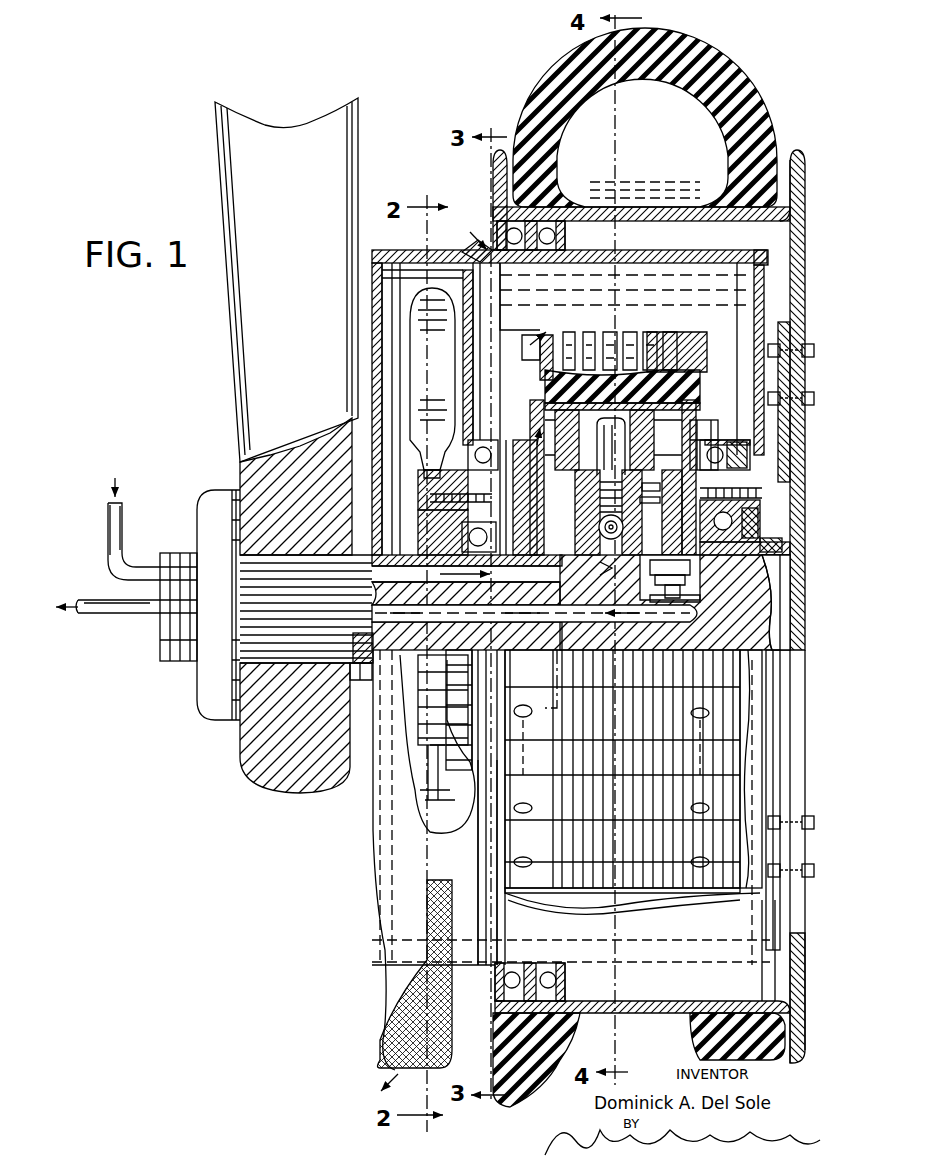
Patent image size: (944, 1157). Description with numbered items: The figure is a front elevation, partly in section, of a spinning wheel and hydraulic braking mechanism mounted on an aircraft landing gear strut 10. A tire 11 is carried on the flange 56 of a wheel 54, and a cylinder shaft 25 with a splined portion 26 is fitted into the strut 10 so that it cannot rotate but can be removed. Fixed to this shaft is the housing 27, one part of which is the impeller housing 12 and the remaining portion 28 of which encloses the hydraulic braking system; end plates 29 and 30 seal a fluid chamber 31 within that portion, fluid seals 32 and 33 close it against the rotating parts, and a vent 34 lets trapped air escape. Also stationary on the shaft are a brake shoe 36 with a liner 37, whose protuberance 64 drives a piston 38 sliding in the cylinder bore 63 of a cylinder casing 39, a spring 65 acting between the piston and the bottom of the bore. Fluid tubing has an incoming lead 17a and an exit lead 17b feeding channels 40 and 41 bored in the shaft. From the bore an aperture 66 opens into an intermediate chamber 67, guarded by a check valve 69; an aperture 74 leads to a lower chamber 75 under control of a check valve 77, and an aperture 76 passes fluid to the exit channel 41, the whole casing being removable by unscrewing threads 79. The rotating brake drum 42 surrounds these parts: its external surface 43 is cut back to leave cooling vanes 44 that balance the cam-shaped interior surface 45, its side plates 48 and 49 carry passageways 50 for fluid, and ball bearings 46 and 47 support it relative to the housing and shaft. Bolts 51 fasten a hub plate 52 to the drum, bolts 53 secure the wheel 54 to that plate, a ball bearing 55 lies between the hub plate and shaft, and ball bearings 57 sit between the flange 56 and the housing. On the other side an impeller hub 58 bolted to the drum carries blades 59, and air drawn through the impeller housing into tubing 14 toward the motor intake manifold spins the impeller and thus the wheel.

The strut 10 is at (302, 279).
The tire 11 is at (738, 88).
The impeller housing 12 is at (398, 250).
The air carrying tubing 14 is at (396, 1011).
The incoming lead 17a is at (116, 543).
The exit lead 17b is at (100, 606).
The cylinder shaft 25 is at (438, 644).
The splined portion 26 is at (268, 612).
The housing 27 is at (488, 968).
The remaining portion of the housing 28 is at (680, 261).
The end plate 29 is at (460, 355).
The end plate 30 is at (757, 318).
The fluid chamber 31 is at (781, 331).
The fluid seal 32 is at (420, 546).
The fluid seal 33 is at (764, 521).
The vent 34 is at (470, 251).
The brake shoe 36 is at (640, 437).
The liner 37 is at (656, 352).
The piston 38 is at (631, 478).
The cylinder casing 39 is at (582, 494).
The channel 40 is at (426, 573).
The exit channel 41 is at (642, 807).
The brake drum 42 is at (672, 320).
The external surface 43 is at (611, 901).
The vanes 44 is at (581, 356).
The interior surface 45 is at (537, 346).
The ball bearings 46 is at (506, 445).
The ball bearings 47 is at (478, 515).
The side plate 48 is at (490, 421).
The side plate 49 is at (713, 440).
The passageways 50 is at (534, 441).
The bolts 51 is at (772, 494).
The hub plate 52 is at (798, 602).
The bolts 53 is at (792, 402).
The wheel 54 is at (806, 268).
The ball bearing 55 is at (785, 549).
The flange 56 is at (796, 158).
The ball bearings 57 is at (566, 237).
The impeller hub 58 is at (418, 501).
The blades 59 is at (444, 386).
The cylinder bore 63 is at (696, 446).
The protuberance 64 is at (582, 478).
The spring 65 is at (586, 509).
The aperture 66 is at (644, 487).
The intermediate chamber 67 is at (642, 512).
The check valve 69 is at (612, 532).
The aperture 74 is at (631, 571).
The lower chamber 75 is at (629, 586).
The aperture 76 is at (616, 598).
The check valve 77 is at (610, 570).
The threads 79 is at (652, 596).